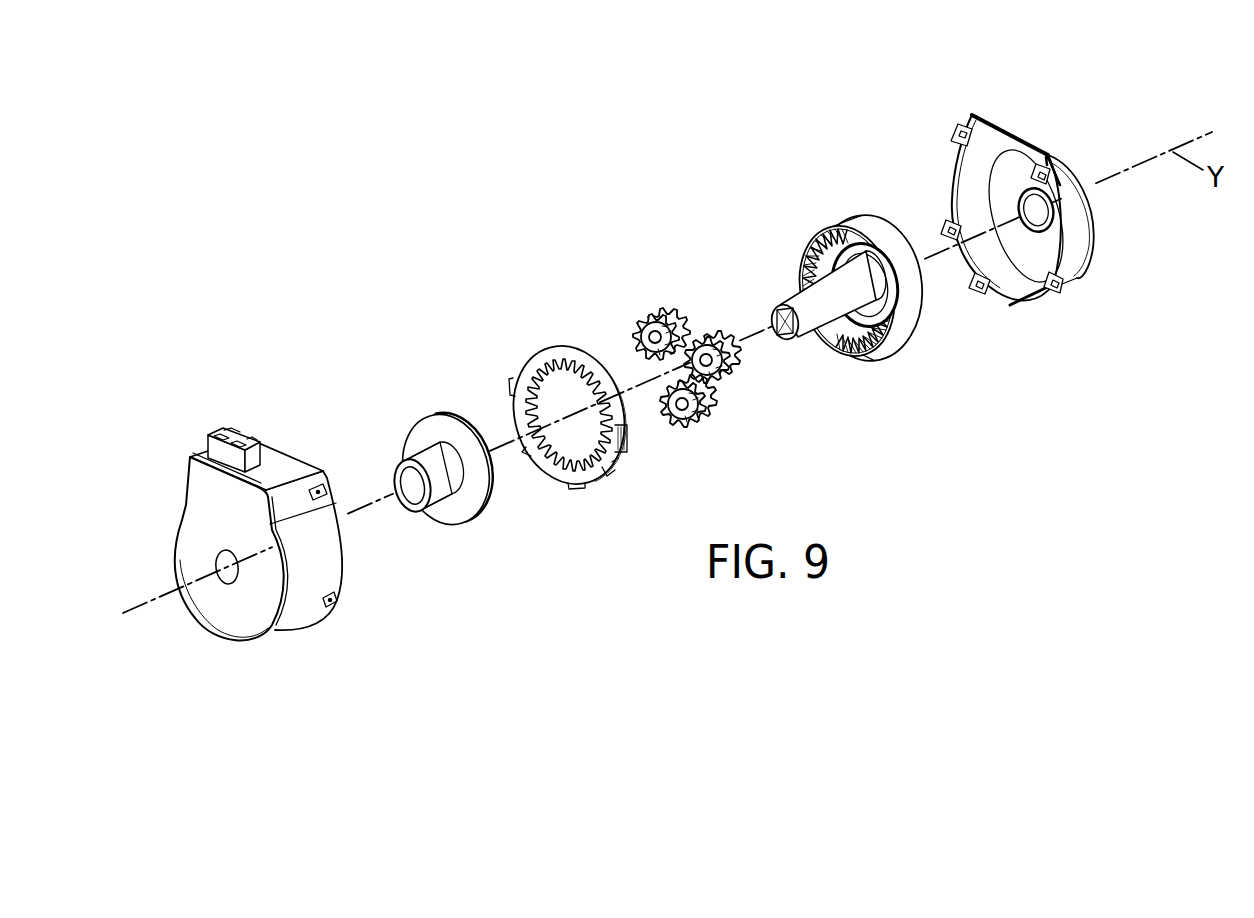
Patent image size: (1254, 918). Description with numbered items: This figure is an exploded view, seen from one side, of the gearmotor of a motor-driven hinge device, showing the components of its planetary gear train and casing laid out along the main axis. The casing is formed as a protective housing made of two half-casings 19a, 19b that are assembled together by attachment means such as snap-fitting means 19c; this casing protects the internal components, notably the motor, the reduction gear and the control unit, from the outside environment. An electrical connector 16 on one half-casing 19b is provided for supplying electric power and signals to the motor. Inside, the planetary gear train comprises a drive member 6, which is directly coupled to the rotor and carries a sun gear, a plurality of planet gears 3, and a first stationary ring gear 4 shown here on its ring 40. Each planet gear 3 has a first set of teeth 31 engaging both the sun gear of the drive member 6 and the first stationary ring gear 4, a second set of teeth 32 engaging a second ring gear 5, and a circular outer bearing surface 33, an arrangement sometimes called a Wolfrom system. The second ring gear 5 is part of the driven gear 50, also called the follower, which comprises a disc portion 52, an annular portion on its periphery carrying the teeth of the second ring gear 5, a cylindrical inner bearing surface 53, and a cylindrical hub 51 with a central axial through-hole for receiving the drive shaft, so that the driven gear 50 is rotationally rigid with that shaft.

The electrical connector 16 is at (220, 452).
The half-casing 19b is at (300, 623).
The half-casing 19a is at (1045, 185).
The snap-fitting means 19c is at (950, 133).
The drive member 6 is at (420, 400).
The ring gear 40 is at (569, 381).
The first stationary ring gear 4 is at (558, 372).
The planet gear 3 is at (694, 371).
The first set of teeth 31 is at (645, 328).
The second set of teeth 32 is at (672, 316).
The circular outer bearing surface 33 is at (732, 372).
The driven gear 50 is at (841, 265).
The second ring gear 5 is at (812, 230).
The cylindrical hub 51 is at (807, 323).
The disc portion 52 is at (877, 352).
The cylindrical inner bearing surface 53 is at (800, 270).